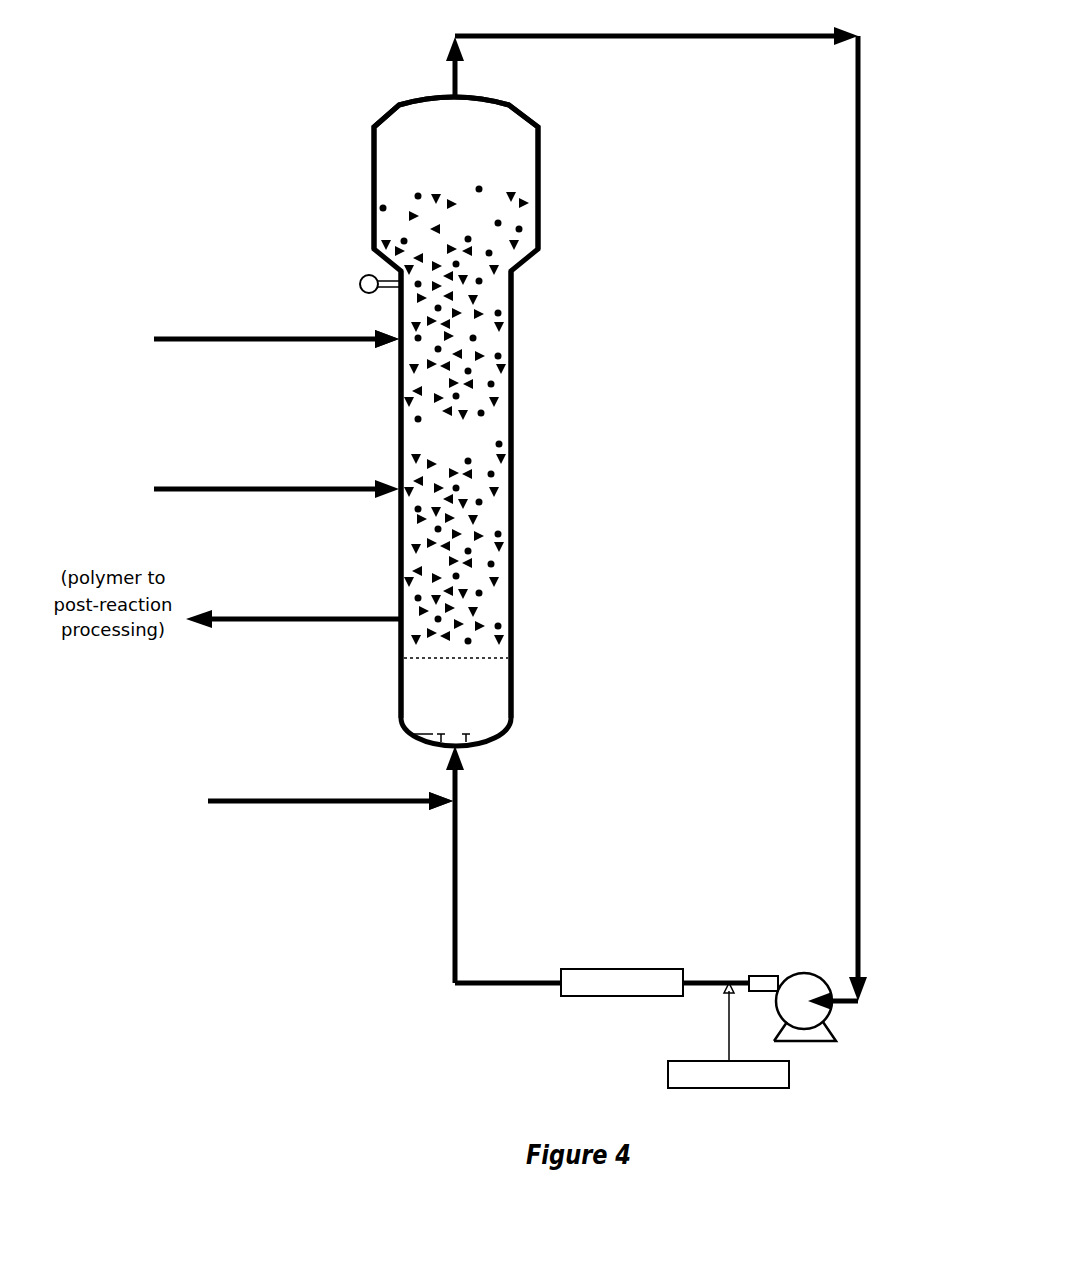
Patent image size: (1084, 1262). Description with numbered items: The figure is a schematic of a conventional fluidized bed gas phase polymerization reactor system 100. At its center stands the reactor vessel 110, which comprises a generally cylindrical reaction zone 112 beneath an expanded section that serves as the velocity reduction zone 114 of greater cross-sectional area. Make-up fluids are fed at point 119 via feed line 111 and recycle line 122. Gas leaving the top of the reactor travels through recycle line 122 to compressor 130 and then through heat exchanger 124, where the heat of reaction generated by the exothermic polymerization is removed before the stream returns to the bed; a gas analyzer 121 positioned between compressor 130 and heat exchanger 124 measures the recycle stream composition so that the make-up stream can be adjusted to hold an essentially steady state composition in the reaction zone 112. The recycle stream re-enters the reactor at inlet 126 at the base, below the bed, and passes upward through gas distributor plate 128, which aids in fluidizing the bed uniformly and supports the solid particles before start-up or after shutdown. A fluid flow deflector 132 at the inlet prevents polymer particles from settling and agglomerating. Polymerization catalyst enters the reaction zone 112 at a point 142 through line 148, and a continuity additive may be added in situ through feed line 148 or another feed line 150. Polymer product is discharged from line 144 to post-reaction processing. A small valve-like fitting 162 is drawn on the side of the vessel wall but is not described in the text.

The reactor system 100 is at (226, 96).
The reactor vessel 110 is at (398, 532).
The reaction zone 112 is at (455, 452).
The velocity reduction zone 114 is at (456, 173).
The feed point 119 is at (450, 805).
The gas analyzer 121 is at (725, 1088).
The recycle line 122 is at (860, 586).
The heat exchanger 124 is at (622, 968).
The inlet 126 is at (447, 748).
The gas distributor plate 128 is at (400, 656).
The compressor 130 is at (812, 973).
The fluid flow deflector 132 is at (412, 733).
The catalyst entry point 142 is at (398, 345).
The product discharge line 144 is at (325, 616).
The catalyst feed line 148 is at (230, 343).
The feed line 150 is at (230, 493).
The valve 162 is at (359, 283).
The feed line 111 is at (230, 805).